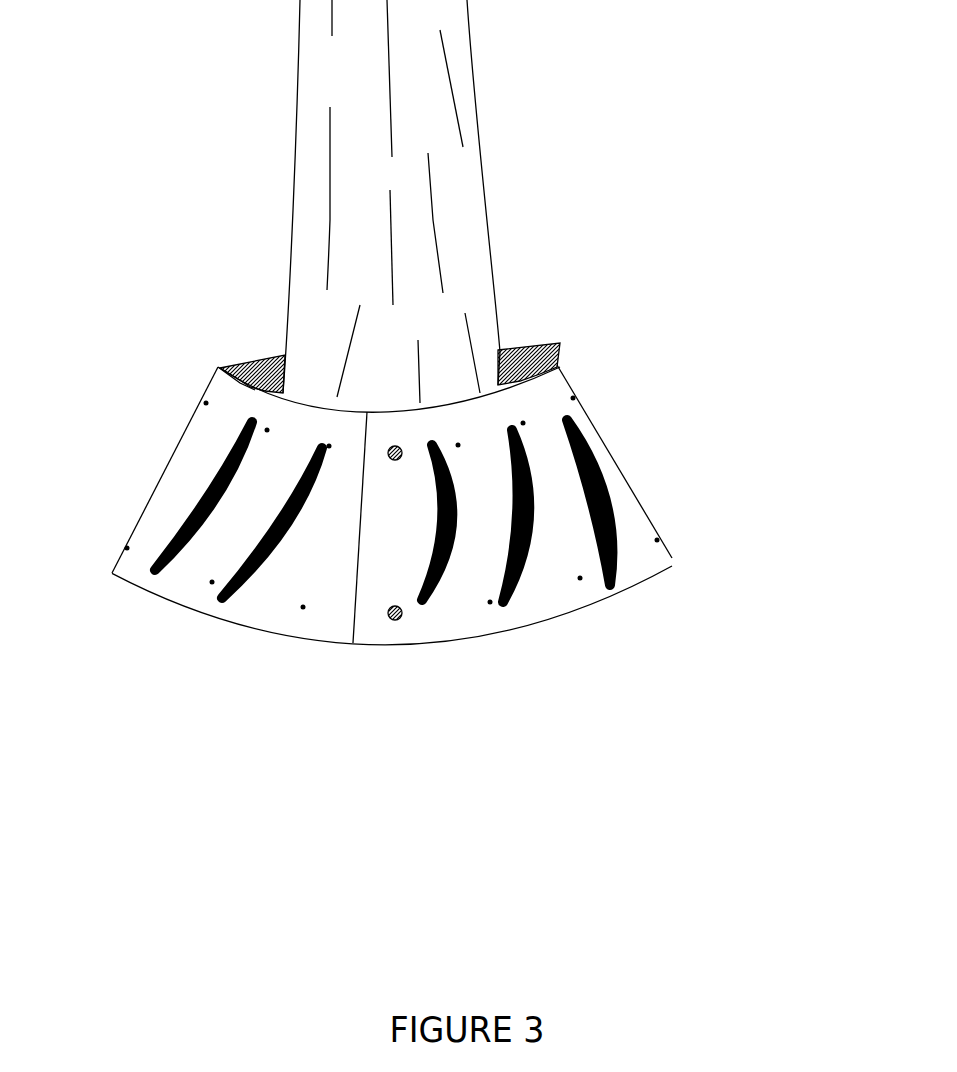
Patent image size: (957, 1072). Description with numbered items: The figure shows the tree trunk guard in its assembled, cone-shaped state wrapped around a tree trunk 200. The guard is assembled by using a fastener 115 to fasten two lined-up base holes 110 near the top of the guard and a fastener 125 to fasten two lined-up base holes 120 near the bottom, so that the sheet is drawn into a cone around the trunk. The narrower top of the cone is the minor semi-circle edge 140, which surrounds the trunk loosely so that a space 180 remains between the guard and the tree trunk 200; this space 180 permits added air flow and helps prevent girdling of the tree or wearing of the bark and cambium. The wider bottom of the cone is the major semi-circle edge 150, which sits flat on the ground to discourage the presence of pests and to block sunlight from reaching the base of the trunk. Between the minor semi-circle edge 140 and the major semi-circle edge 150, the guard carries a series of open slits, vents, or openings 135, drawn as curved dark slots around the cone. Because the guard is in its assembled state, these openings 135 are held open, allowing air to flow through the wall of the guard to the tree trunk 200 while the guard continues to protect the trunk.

The base holes 110 is at (572, 400).
The fastener 115 is at (392, 455).
The base holes 120 is at (657, 538).
The fastener 125 is at (390, 618).
The open slits, vents, or openings 135 is at (603, 473).
The minor semi-circle edge 140 is at (240, 383).
The major semi-circle edge 150 is at (638, 585).
The space 180 is at (498, 350).
The tree trunk 200 is at (443, 182).